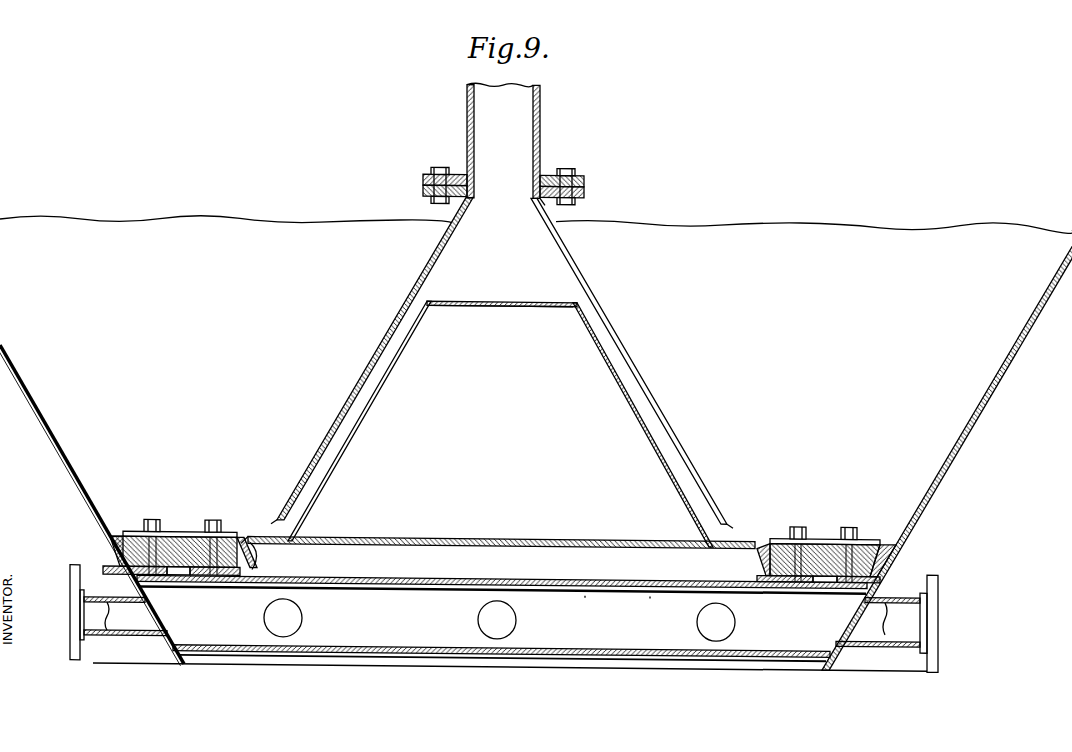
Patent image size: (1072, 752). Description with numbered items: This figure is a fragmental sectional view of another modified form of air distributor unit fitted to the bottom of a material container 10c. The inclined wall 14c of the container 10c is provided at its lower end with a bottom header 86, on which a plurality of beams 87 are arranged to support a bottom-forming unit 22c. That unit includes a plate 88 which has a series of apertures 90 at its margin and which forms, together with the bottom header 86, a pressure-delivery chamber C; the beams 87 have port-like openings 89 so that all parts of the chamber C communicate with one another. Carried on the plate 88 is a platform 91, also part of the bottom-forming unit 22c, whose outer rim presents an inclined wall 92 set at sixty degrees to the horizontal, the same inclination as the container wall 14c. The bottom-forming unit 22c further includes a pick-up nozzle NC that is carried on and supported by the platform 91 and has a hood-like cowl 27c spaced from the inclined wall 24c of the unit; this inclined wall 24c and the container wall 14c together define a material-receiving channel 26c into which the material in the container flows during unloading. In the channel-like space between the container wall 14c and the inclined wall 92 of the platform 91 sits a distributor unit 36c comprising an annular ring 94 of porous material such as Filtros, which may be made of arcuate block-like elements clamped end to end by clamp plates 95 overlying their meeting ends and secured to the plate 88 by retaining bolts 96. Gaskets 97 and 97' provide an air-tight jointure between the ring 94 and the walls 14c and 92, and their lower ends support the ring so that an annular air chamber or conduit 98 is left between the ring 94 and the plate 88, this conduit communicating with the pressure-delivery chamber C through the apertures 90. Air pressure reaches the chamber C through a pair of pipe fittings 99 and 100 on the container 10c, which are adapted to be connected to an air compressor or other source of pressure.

The container 10c is at (704, 234).
The inclined wall 14c is at (1018, 331).
The bottom-forming unit 22c is at (502, 400).
The inclined wall 24c is at (660, 458).
The material-receiving channel 26c is at (113, 534).
The hood-like cowl 27c is at (589, 282).
The pick-up nozzle NC is at (629, 347).
The distributor unit 36c is at (832, 533).
The bottom header 86 is at (433, 648).
The beams 87 is at (637, 611).
The plate 88 is at (396, 586).
The port-like openings 89 is at (303, 623).
The apertures 90 is at (178, 582).
The platform 91 is at (548, 533).
The inclined wall 92 is at (760, 561).
The annular ring 94 is at (177, 548).
The clamp plates 95 is at (232, 536).
The retaining bolts 96 is at (152, 523).
The gaskets 97 is at (111, 560).
The packing wedge 97' is at (241, 576).
The annular air chamber or conduit 98 is at (170, 581).
The pipe fitting 99 is at (903, 603).
The pipe fitting 100 is at (100, 648).
The pressure-delivery chamber C is at (583, 611).